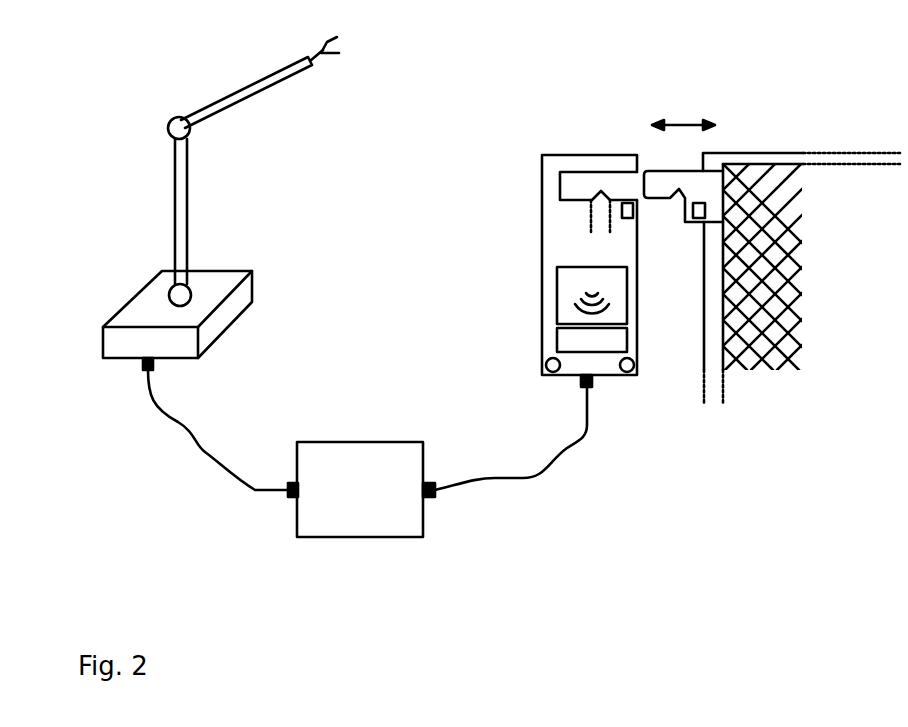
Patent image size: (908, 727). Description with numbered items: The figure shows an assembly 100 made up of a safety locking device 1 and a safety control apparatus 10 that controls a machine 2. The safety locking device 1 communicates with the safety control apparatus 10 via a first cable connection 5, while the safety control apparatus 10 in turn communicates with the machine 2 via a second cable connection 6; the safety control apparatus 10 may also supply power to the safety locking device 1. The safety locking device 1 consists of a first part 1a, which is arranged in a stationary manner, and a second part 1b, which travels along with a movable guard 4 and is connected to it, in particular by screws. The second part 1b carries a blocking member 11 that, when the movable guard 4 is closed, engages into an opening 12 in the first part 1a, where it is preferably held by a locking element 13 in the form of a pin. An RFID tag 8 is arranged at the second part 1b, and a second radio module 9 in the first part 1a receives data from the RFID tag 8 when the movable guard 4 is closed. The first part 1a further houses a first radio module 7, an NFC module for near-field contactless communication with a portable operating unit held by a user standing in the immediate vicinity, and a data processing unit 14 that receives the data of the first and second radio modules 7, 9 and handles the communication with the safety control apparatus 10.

The safety locking device 1 is at (617, 128).
The first part 1a is at (542, 198).
The second part 1b is at (713, 171).
The machine 2 is at (103, 335).
The movable guard 4 is at (770, 165).
The first cable connection 5 is at (523, 478).
The second cable connection 6 is at (212, 452).
The first radio module 7 is at (568, 300).
The RFID tag 8 is at (700, 212).
The second radio module 9 is at (630, 213).
The safety control apparatus 10 is at (364, 537).
The blocking member 11 is at (652, 171).
The opening 12 is at (588, 183).
The locking element 13 is at (592, 214).
The data processing unit 14 is at (565, 340).
The assembly 100 is at (612, 536).